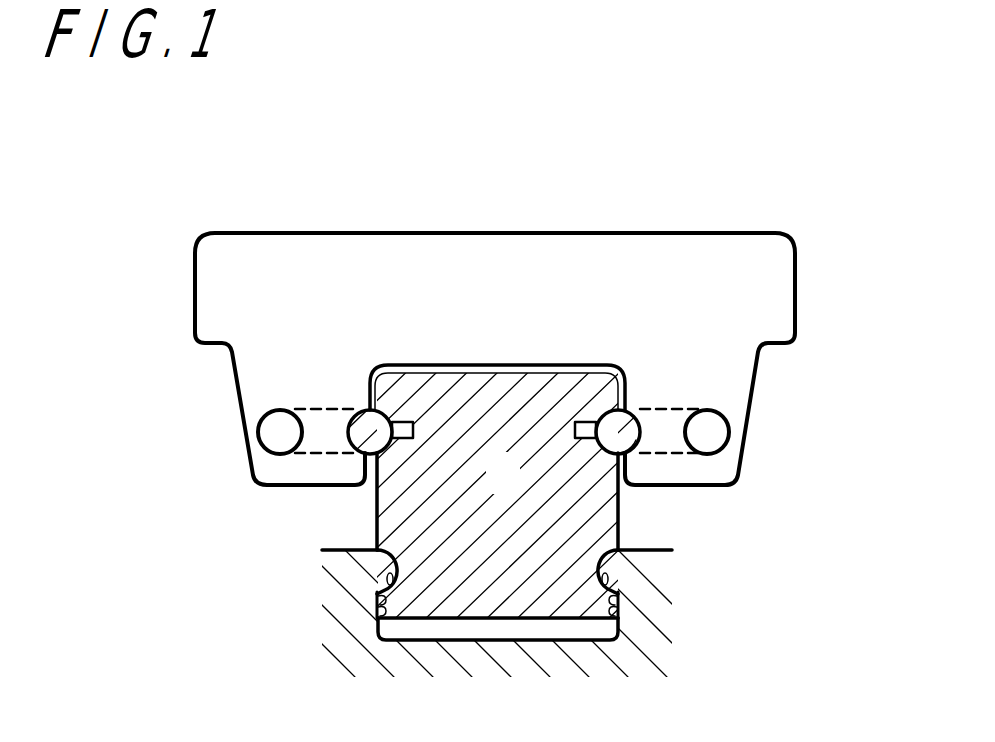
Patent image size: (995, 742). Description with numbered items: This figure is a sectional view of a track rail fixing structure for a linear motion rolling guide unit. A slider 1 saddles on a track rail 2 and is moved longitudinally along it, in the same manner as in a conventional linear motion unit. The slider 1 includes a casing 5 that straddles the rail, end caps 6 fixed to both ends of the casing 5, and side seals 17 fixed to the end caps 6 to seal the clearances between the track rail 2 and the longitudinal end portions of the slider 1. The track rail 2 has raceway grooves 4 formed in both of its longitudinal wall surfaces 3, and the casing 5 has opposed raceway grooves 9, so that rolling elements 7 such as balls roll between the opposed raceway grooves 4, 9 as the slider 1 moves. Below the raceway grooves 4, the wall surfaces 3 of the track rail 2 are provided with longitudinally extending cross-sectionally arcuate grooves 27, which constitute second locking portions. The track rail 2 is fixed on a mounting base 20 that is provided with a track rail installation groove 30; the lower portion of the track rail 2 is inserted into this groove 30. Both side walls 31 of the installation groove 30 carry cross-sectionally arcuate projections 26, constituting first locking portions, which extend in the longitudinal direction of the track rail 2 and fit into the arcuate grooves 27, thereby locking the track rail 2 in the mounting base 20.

The slider 1 is at (495, 299).
The track rail 2 is at (515, 488).
The longitudinal wall surfaces 3 is at (377, 535).
The raceway grooves 4 is at (375, 447).
The casing 5 is at (495, 359).
The end caps 6 is at (495, 359).
The rolling elements 7 is at (363, 440).
The raceway grooves 9 is at (624, 442).
The side seals 17 is at (495, 359).
The mounting base 20 is at (657, 562).
The arcuate projections 26 is at (388, 567).
The arcuate grooves 27 is at (389, 598).
The track rail installation groove 30 is at (483, 632).
The side walls 31 is at (378, 617).